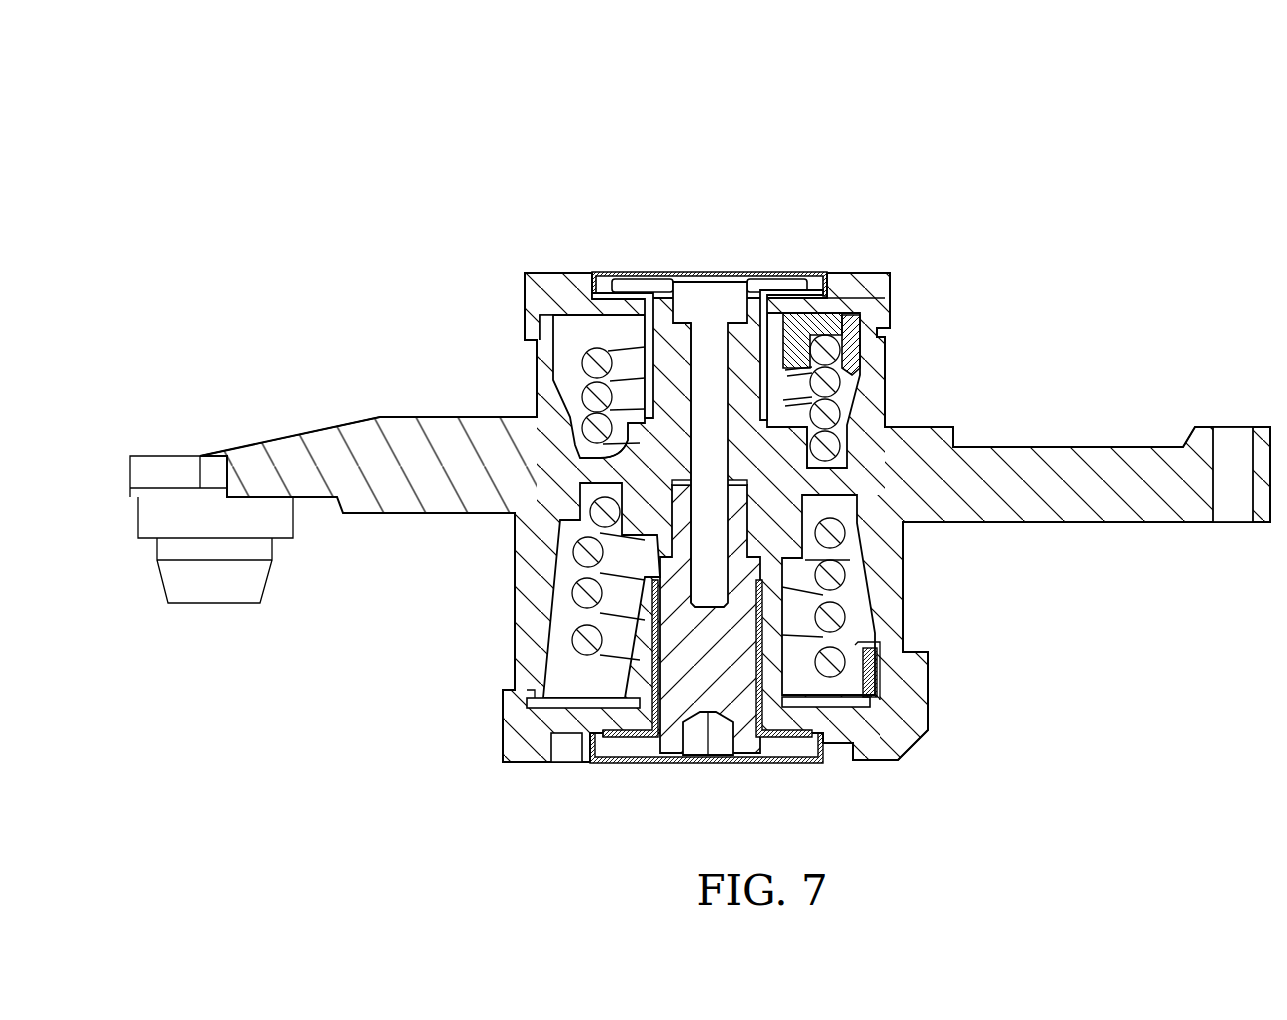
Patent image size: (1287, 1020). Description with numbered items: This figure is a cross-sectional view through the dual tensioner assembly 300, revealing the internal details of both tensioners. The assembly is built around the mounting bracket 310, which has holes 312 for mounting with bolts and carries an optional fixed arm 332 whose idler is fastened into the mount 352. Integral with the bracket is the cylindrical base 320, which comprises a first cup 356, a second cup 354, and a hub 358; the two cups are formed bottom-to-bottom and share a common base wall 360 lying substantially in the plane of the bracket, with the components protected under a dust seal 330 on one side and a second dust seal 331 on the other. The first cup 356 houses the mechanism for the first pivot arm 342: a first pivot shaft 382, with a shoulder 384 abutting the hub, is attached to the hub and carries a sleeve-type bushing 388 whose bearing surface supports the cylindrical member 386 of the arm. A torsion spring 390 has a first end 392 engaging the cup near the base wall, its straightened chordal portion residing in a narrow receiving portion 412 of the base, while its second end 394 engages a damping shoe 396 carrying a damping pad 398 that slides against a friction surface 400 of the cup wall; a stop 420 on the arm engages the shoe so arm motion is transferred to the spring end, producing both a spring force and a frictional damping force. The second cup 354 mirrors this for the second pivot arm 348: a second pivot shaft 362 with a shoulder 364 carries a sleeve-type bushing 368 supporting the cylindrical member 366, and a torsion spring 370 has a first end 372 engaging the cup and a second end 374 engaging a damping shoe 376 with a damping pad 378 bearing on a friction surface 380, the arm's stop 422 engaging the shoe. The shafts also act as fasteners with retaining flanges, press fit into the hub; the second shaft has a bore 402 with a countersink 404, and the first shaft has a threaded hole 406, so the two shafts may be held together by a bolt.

The tensioner assembly 300 is at (937, 68).
The mounting bracket 310 is at (1097, 467).
The holes 312 is at (1237, 440).
The cylindrical base 320 is at (512, 630).
The dust seal 330 is at (807, 268).
The second dust seal 331 is at (708, 764).
The fixed arm 332 is at (277, 452).
The first pivot arm 342 is at (533, 737).
The second pivot arm 348 is at (567, 300).
The mount 352 is at (203, 573).
The second cup 354 is at (547, 378).
The first cup 356 is at (535, 590).
The hub 358 is at (778, 490).
The common base wall 360 is at (885, 513).
The second pivot shaft 362 is at (747, 337).
The shoulder 364 is at (588, 487).
The cylindrical member 366 is at (612, 287).
The sleeve-type bushing 368 is at (652, 308).
The torsion spring 370 is at (823, 446).
The first end 372 is at (827, 407).
The second end 374 is at (863, 313).
The damping shoe 376 is at (827, 333).
The damping pad 378 is at (857, 357).
The friction surface 380 is at (837, 368).
The first pivot shaft 382 is at (676, 716).
The shoulder 384 is at (645, 540).
The cylindrical member 386 is at (597, 737).
The sleeve-type bushing 388 is at (655, 752).
The torsion spring 390 is at (833, 587).
The first end 392 is at (580, 516).
The second end 394 is at (827, 660).
The damping shoe 396 is at (855, 733).
The damping pad 398 is at (877, 705).
The friction surface 400 is at (870, 636).
The bore 402 is at (703, 357).
The countersink 404 is at (682, 322).
The threaded hole 406 is at (718, 602).
The narrow receiving portion 412 is at (592, 500).
The stop 420 is at (593, 686).
The stop 422 is at (625, 328).